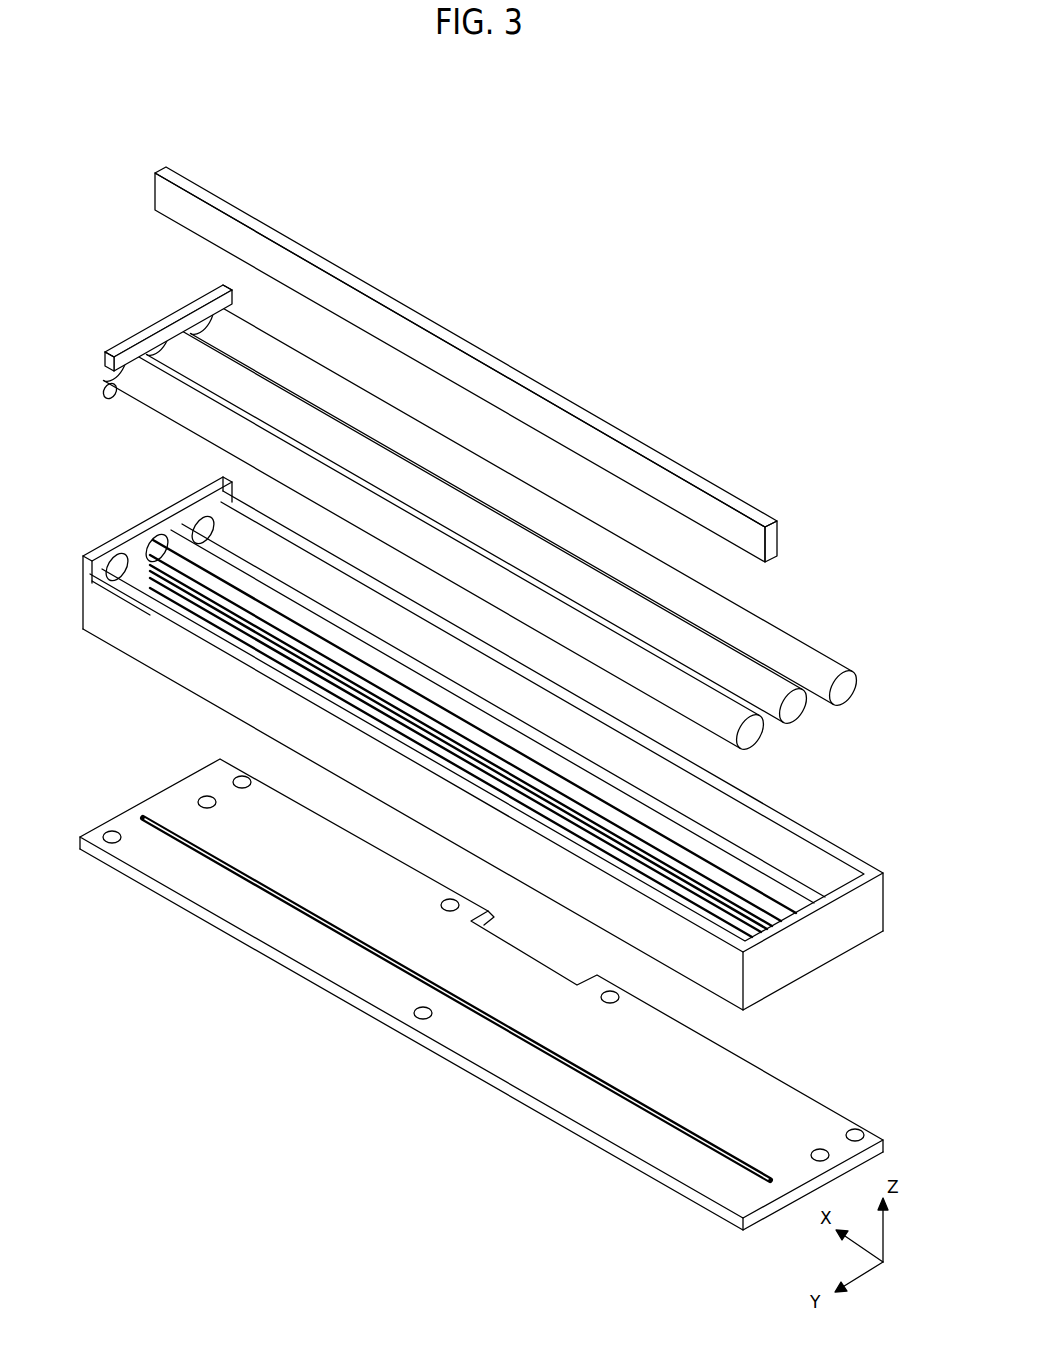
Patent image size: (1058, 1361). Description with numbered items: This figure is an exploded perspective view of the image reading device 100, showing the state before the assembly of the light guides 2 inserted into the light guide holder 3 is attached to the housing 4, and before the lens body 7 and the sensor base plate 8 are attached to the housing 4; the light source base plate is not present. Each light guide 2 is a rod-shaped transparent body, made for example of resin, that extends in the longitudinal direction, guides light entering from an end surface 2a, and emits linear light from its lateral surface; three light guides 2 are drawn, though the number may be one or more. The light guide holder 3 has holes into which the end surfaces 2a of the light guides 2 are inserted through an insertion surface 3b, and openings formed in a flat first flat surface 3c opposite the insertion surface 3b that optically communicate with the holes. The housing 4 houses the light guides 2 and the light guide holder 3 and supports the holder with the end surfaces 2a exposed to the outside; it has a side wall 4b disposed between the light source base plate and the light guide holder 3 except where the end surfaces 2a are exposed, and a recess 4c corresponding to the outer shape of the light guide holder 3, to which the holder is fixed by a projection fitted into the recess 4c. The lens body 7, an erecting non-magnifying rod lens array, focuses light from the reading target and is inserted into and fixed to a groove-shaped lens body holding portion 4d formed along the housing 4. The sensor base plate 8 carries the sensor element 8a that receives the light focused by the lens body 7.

The image reading device 100 is at (475, 735).
The light guide 2 is at (800, 652).
The end surface 2a is at (107, 370).
The light guide holder 3 is at (196, 307).
The insertion surface 3b is at (228, 303).
The first flat surface 3c is at (125, 345).
The housing 4 is at (484, 718).
The side wall 4b is at (137, 500).
The recess 4c is at (213, 557).
The lens body holding portion 4d is at (165, 603).
The lens body 7 is at (620, 447).
The sensor base plate 8 is at (486, 994).
The sensor element 8a is at (592, 1078).